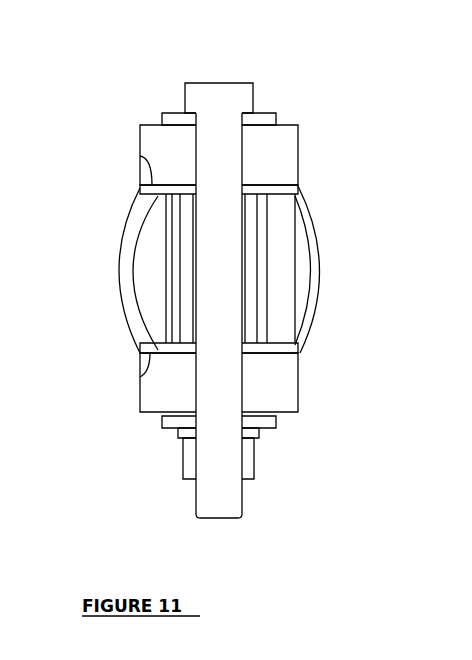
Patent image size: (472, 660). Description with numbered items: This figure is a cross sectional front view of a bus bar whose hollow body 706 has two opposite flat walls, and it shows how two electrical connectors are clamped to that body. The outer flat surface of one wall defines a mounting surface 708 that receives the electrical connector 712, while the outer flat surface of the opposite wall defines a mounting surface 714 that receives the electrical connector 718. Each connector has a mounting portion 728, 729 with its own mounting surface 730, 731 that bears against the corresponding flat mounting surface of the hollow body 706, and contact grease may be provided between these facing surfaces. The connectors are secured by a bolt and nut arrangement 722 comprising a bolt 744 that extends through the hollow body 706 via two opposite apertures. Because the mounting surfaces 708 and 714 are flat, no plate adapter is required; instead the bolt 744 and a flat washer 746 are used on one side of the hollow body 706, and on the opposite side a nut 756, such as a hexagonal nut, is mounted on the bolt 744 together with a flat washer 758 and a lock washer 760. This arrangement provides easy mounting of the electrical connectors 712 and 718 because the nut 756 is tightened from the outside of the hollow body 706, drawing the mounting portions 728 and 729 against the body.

The bolt and nut arrangement 722 is at (215, 58).
The bolt 744 is at (256, 83).
The flat washer 746 is at (278, 114).
The mounting portion 728 is at (300, 143).
The electrical connector 712 is at (126, 128).
The mounting surface 708 is at (139, 155).
The hollow body 706 is at (334, 232).
The mounting surface 730 is at (128, 220).
The mounting surface 731 is at (123, 323).
The mounting surface 714 is at (137, 377).
The mounting portion 729 is at (300, 379).
The electrical connector 718 is at (137, 416).
The flat washer 758 is at (278, 423).
The lock washer 760 is at (261, 435).
The nut 756 is at (257, 468).